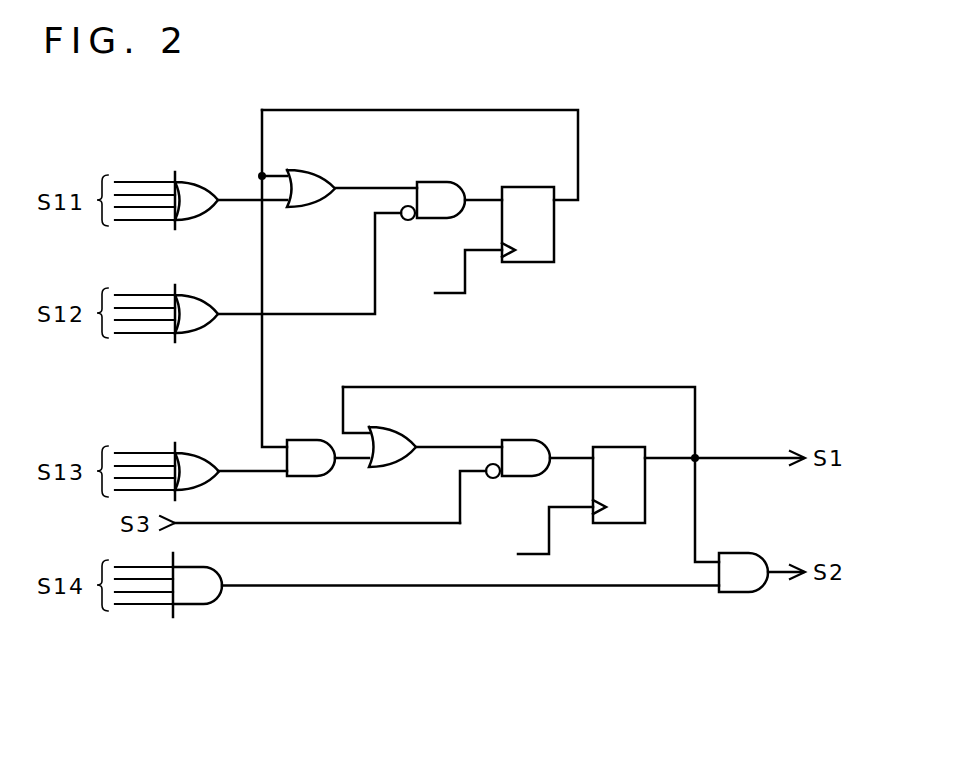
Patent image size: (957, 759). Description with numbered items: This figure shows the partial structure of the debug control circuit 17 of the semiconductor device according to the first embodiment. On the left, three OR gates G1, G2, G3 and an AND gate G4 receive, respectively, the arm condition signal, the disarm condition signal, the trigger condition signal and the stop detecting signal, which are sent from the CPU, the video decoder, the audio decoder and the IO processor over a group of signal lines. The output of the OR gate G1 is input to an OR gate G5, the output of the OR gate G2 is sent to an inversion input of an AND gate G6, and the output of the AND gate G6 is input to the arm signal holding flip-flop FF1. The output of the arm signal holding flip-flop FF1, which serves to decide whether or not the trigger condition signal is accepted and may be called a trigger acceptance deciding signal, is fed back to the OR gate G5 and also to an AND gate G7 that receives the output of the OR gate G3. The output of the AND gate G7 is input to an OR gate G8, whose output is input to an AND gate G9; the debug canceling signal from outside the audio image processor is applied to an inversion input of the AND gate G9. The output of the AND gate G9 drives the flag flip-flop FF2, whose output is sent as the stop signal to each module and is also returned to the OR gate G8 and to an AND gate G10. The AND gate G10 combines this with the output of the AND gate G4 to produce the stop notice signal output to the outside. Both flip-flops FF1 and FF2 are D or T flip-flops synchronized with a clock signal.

The OR gate G1 is at (193, 192).
The OR gate G2 is at (193, 305).
The OR gate G3 is at (193, 463).
The AND gate G4 is at (195, 576).
The OR gate G5 is at (315, 178).
The AND gate G6 is at (443, 192).
The AND gate G7 is at (302, 445).
The OR gate G8 is at (393, 445).
The AND gate G9 is at (528, 445).
The AND gate G10 is at (740, 553).
The arm signal holding flip-flop FF1 is at (527, 192).
The flag flip-flop FF2 is at (620, 447).
The debug control circuit 17 is at (707, 181).